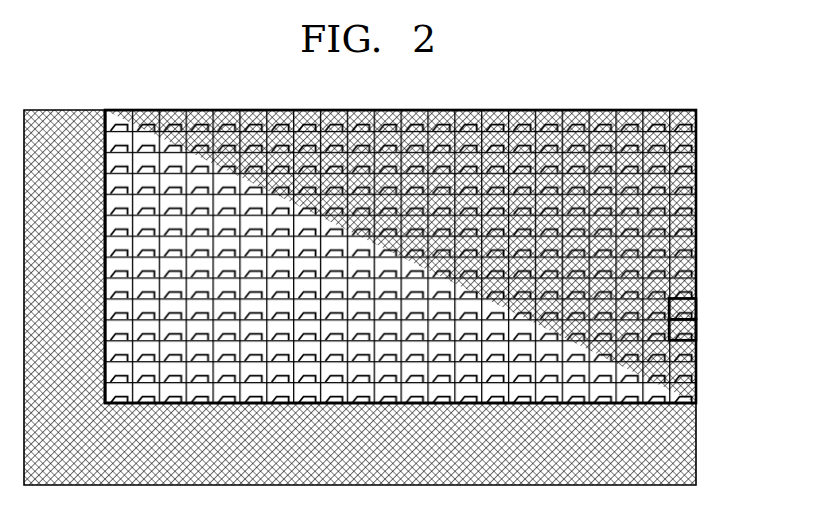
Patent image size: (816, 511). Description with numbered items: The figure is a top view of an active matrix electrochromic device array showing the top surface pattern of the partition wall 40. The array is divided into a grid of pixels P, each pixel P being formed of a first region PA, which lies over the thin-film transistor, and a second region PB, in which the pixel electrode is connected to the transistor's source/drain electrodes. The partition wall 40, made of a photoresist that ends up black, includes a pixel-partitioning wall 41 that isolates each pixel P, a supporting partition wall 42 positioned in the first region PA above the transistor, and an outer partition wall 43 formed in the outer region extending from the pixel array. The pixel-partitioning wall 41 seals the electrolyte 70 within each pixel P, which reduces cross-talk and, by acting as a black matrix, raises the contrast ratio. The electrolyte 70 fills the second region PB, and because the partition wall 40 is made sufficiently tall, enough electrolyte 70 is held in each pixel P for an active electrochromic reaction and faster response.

The partition wall 40 is at (407, 297).
The pixel-partitioning wall 41 is at (425, 256).
The supporting partition wall 42 is at (698, 404).
The outer partition wall 43 is at (698, 447).
The electrolyte 70 is at (682, 350).
The pixel P is at (722, 314).
The first region PA is at (700, 302).
The second region PB is at (700, 318).